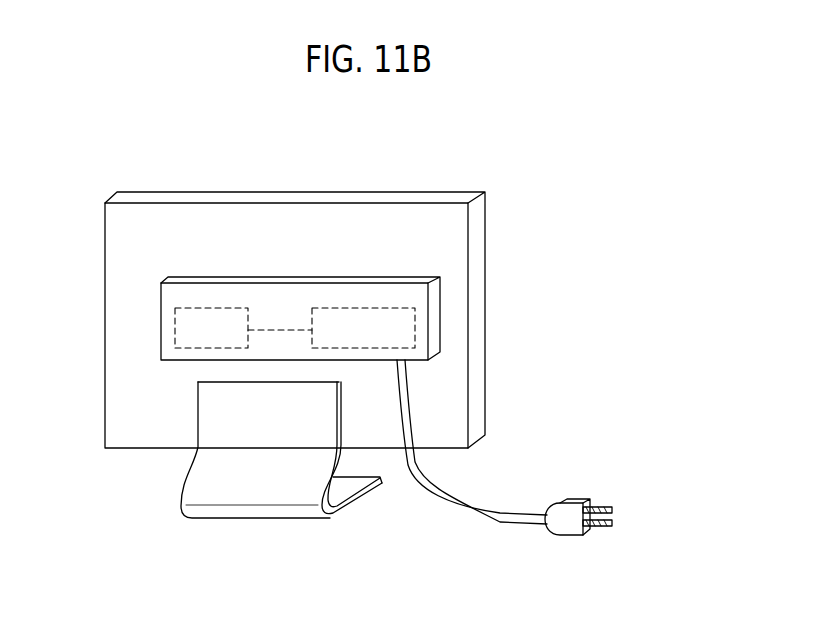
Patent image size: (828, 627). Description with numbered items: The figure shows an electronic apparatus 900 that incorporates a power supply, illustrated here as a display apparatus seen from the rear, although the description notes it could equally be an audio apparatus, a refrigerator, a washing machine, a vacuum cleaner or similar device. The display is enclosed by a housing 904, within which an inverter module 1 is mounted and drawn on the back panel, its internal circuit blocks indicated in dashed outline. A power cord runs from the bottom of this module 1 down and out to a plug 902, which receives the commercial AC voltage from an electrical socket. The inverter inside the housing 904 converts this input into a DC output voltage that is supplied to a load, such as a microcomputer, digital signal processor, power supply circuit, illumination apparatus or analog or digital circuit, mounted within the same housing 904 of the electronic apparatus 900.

The electronic apparatus 900 is at (512, 213).
The housing 904 is at (355, 222).
The power supply device 1 is at (400, 333).
The plug 902 is at (563, 532).